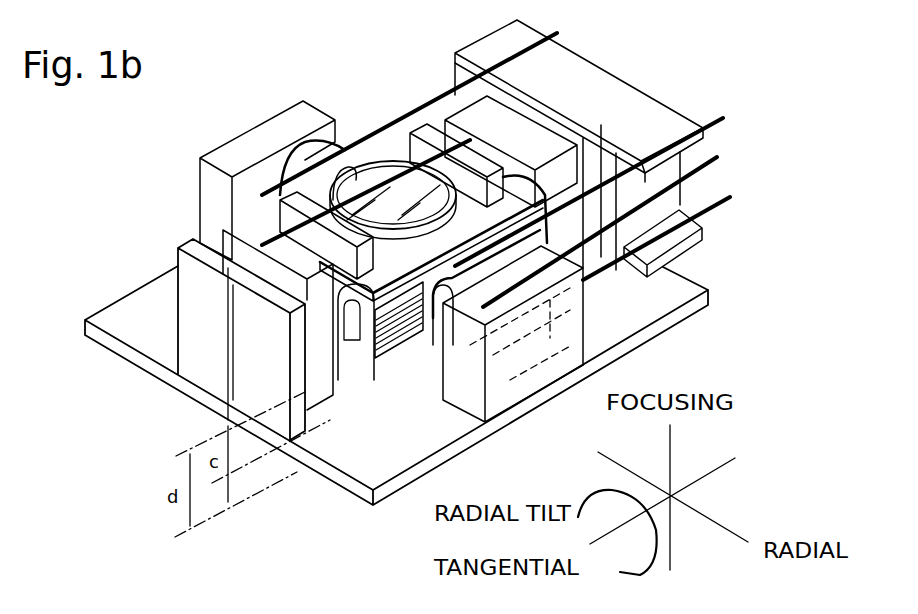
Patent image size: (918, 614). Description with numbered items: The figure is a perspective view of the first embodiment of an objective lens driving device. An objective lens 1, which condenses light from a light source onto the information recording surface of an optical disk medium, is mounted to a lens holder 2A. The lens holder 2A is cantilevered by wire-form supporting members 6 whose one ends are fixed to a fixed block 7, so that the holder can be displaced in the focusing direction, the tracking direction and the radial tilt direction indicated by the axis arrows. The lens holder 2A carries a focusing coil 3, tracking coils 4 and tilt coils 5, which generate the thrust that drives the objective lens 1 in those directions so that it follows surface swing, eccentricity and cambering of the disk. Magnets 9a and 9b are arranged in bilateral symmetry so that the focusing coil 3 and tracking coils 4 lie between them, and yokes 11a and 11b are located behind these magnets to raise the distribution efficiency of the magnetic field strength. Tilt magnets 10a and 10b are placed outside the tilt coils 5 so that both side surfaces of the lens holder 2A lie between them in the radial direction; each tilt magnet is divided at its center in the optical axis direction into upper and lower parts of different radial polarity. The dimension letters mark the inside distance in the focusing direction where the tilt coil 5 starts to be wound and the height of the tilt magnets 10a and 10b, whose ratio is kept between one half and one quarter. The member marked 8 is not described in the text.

The objective lens 1 is at (367, 175).
The lens holder 2A is at (255, 205).
The focusing coil 3 is at (397, 330).
The tracking coils 4 is at (352, 370).
The tilt coils 5 is at (586, 225).
The supporting members 6 is at (442, 84).
The fixed block 7 is at (638, 100).
The wire fixing block 8 is at (660, 204).
The magnet 9a is at (223, 276).
The magnet 9b is at (505, 108).
The tilt magnet 10a is at (580, 232).
The tilt magnet 10b is at (261, 142).
The yoke 11a is at (190, 243).
The yoke 11b is at (555, 106).